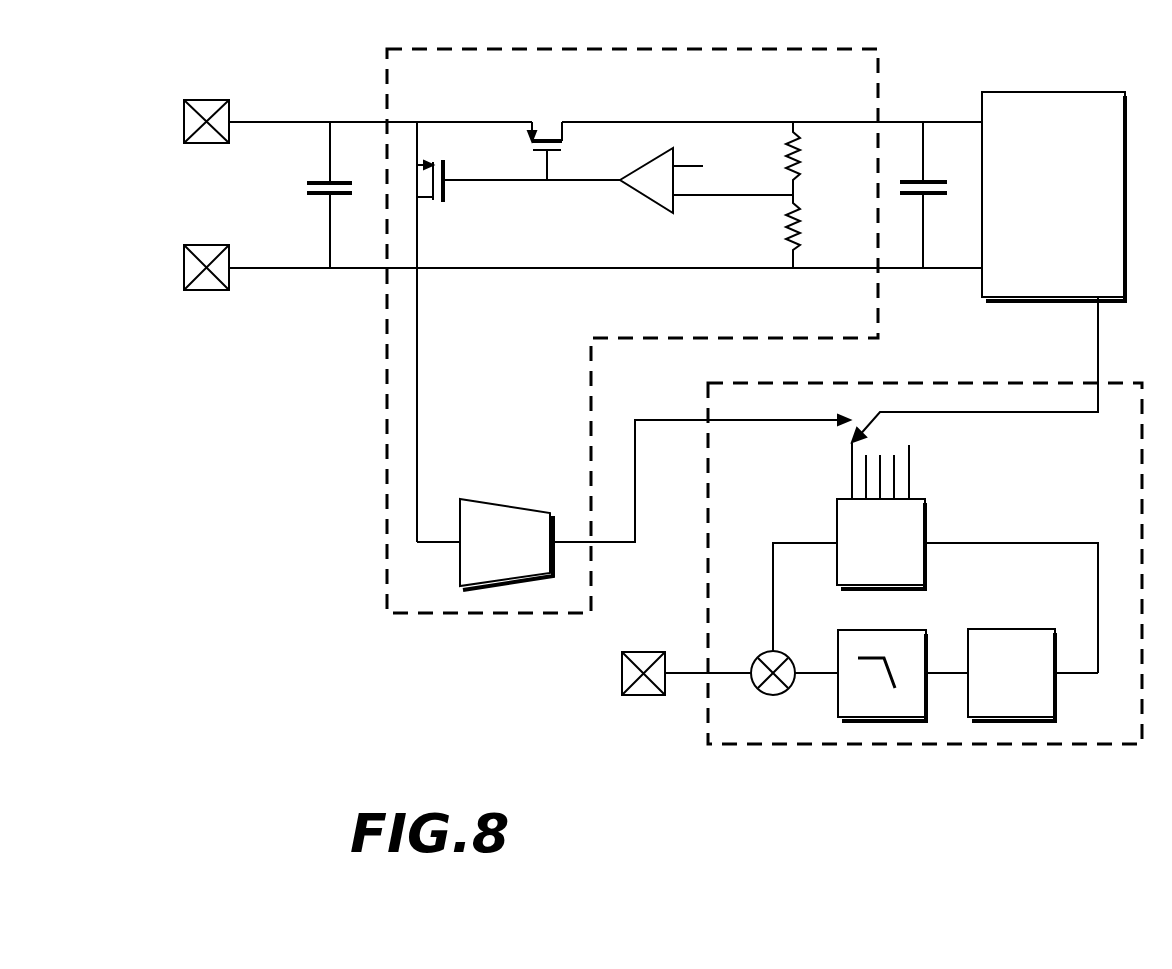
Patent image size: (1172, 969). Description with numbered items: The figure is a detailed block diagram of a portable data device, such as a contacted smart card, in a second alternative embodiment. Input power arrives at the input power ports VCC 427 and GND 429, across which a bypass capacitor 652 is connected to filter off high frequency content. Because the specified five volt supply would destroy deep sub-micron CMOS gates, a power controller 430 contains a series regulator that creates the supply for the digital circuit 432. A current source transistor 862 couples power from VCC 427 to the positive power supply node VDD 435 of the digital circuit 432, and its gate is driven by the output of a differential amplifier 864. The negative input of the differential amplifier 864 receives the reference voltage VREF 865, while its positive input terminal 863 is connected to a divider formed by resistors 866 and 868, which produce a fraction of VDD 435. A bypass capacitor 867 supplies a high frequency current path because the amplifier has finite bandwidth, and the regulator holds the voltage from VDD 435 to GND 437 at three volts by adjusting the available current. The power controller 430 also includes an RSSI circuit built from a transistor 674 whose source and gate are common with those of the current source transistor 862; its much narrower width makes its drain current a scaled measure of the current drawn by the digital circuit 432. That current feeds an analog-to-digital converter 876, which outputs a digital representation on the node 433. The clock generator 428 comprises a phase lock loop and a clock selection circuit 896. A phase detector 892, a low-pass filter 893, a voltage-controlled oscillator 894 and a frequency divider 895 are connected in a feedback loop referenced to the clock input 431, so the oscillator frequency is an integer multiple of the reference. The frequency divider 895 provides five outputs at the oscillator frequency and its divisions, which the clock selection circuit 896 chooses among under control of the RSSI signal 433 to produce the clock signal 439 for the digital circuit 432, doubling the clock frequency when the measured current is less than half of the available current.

The input power port VCC 427 is at (205, 148).
The input power port GND 429 is at (197, 243).
The bypass capacitor 652 is at (312, 180).
The power controller 430 is at (748, 50).
The RSSI transistor 674 is at (440, 200).
The current source transistor 862 is at (545, 122).
The differential amplifier 864 is at (645, 160).
The reference voltage VREF 865 is at (686, 160).
The positive input terminal 863 is at (718, 201).
The resistor 866 is at (806, 178).
The resistor 868 is at (806, 244).
The bypass capacitor 867 is at (932, 200).
The positive power supply node VDD 435 is at (935, 120).
The GND power port 437 is at (936, 270).
The digital circuit 432 is at (1058, 92).
The clock signal 439 is at (1096, 346).
The clock generator 428 is at (786, 748).
The analog-to-digital converter 876 is at (494, 500).
The RSSI signal 433 is at (672, 416).
The clock selection circuit 896 is at (900, 420).
The frequency divider 895 is at (836, 518).
The phase detector 892 is at (752, 660).
The clock input 431 is at (642, 698).
The low-pass filter 893 is at (884, 630).
The voltage-controlled oscillator 894 is at (1014, 630).